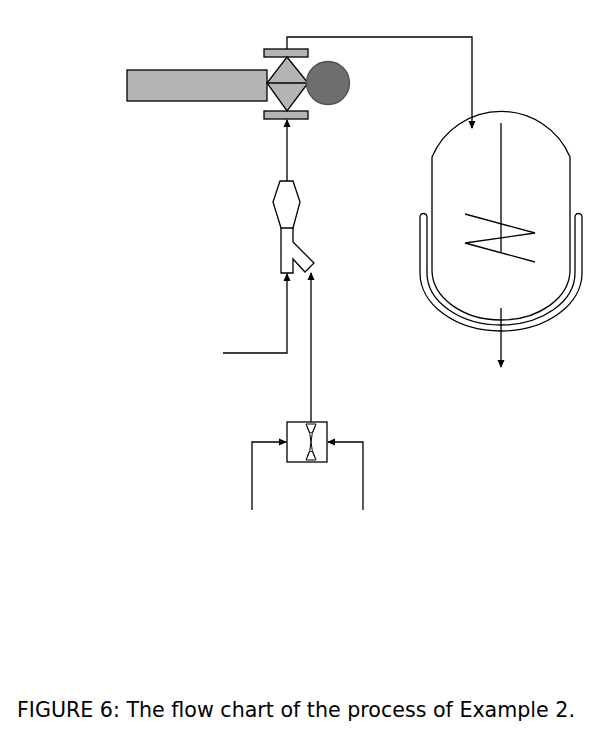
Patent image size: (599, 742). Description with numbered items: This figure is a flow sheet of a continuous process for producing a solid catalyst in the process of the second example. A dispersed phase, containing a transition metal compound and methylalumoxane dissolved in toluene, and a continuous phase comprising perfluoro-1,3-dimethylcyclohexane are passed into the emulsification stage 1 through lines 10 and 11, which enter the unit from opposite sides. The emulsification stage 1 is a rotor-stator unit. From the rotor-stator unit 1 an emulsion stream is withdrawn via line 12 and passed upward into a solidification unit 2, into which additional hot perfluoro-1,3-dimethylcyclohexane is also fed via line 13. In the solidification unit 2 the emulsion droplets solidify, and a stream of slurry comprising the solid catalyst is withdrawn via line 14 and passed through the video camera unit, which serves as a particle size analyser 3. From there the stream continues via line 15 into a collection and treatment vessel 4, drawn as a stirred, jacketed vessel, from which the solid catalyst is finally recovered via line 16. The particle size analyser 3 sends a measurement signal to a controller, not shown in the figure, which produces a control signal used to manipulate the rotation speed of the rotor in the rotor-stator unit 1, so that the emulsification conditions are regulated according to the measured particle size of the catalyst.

The emulsification stage 1 is at (307, 454).
The solidification unit 2 is at (301, 227).
The particle size analyser 3 is at (257, 84).
The collection and treatment vessel 4 is at (501, 221).
The line 10 is at (362, 476).
The line 11 is at (256, 476).
The line 12 is at (330, 347).
The line 13 is at (255, 313).
The line 14 is at (304, 150).
The line 15 is at (379, 69).
The line 16 is at (521, 337).